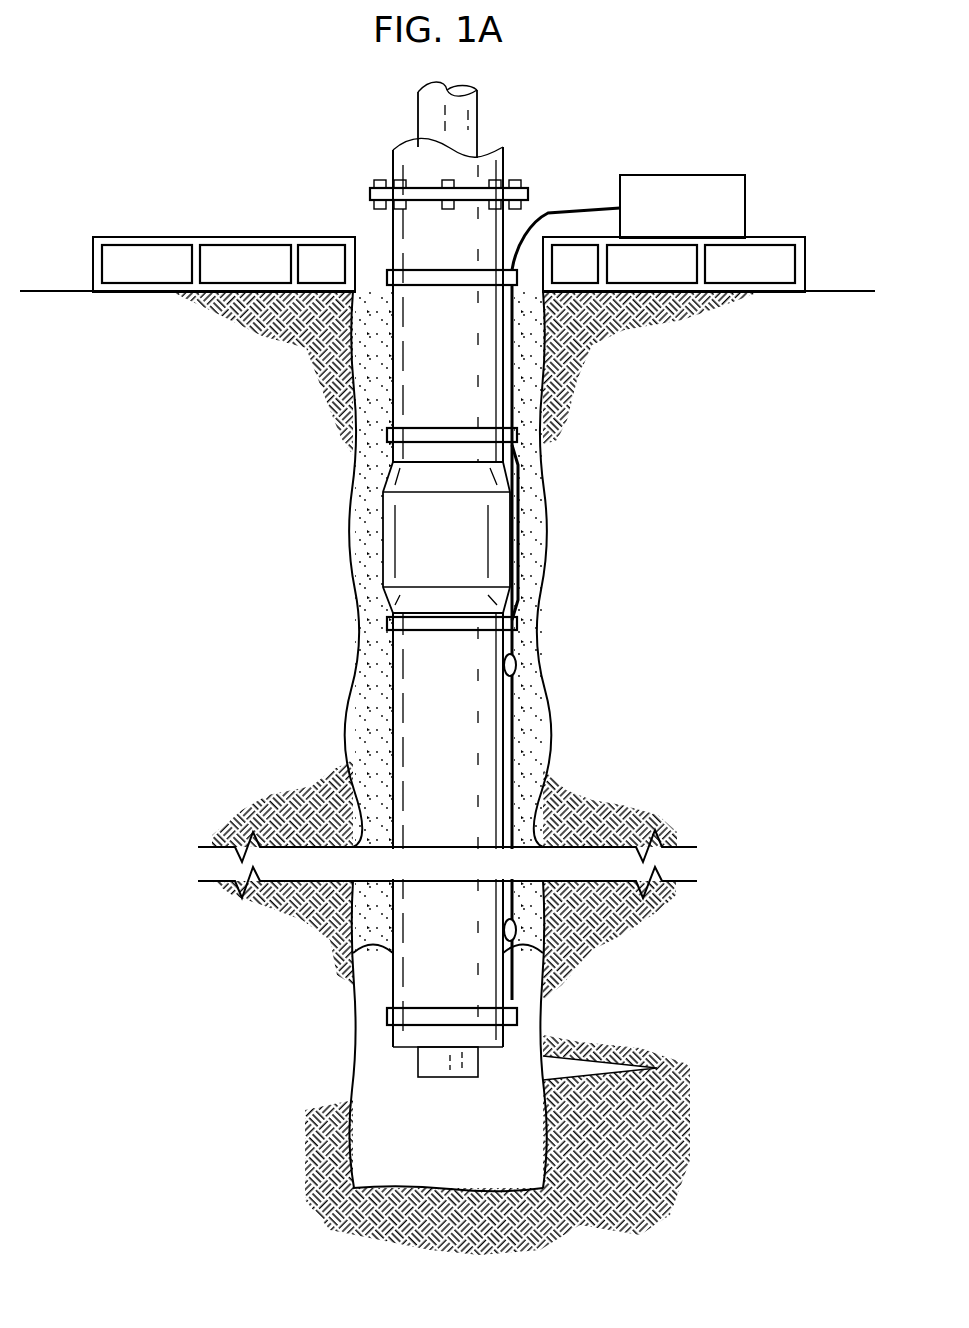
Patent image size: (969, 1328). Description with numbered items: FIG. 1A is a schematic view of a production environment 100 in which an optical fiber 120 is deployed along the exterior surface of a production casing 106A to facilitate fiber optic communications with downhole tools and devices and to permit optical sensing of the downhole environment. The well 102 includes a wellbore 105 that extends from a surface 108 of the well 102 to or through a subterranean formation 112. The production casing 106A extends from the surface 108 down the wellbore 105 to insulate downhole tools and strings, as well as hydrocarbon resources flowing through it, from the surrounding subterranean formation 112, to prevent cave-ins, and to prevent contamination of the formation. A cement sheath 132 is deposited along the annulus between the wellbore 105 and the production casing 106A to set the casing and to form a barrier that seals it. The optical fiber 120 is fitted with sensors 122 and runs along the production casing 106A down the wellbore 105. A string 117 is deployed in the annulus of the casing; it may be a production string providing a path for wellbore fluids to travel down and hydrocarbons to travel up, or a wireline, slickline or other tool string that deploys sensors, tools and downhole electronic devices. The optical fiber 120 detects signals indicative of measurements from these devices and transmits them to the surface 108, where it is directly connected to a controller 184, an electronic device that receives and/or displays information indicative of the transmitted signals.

The production environment 100 is at (210, 53).
The well 102 is at (318, 168).
The wellbore 105 is at (350, 1060).
The production casing 106A is at (392, 232).
The surface 108 is at (838, 290).
The subterranean formation 112 is at (258, 410).
The string 117 is at (418, 113).
The optical fiber 120 is at (563, 207).
The sensors 122 is at (517, 665).
The cement sheath 132 is at (360, 613).
The controller 184 is at (683, 173).